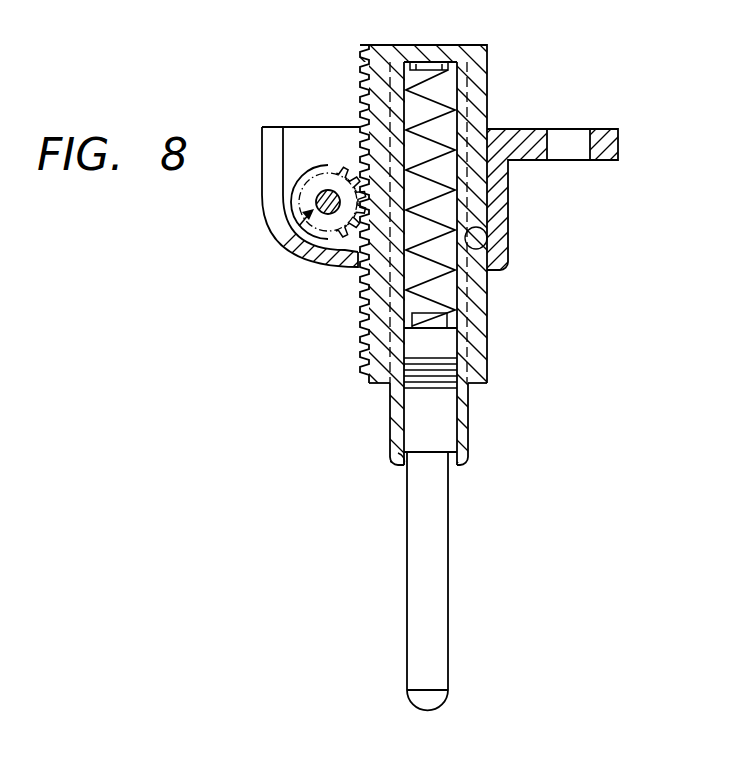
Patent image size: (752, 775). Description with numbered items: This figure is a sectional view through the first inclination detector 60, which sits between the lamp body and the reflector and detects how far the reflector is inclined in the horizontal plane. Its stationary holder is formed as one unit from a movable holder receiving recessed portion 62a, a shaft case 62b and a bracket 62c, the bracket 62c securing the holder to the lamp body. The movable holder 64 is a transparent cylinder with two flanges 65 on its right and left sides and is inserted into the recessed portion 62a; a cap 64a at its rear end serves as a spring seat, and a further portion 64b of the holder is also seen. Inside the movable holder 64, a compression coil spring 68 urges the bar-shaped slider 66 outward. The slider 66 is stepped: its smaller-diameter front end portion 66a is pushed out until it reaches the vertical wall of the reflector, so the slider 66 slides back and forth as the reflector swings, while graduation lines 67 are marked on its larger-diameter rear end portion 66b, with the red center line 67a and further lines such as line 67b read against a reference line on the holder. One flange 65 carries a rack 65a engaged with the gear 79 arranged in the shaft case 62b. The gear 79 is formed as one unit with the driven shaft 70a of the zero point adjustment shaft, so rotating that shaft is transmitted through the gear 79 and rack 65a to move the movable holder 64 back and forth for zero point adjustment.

The first inclination detector 60 is at (326, 399).
The movable holder receiving recessed portion 62a is at (500, 247).
The shaft case 62b is at (270, 133).
The bracket 62c is at (618, 160).
The movable holder 64 is at (429, 284).
The cap 64a is at (405, 50).
The housing bottom lip 64b is at (398, 462).
The flanges 65 is at (482, 323).
The rack 65a is at (362, 352).
The slider 66 is at (540, 573).
The front end portion 66a is at (447, 542).
The rear end portion 66b is at (443, 437).
The graduation lines 67 is at (539, 389).
The center line 67a is at (463, 372).
The piston grooves 67b is at (458, 392).
The compression coil spring 68 is at (437, 100).
The driven shaft 70a is at (293, 226).
The gear 79 is at (325, 232).